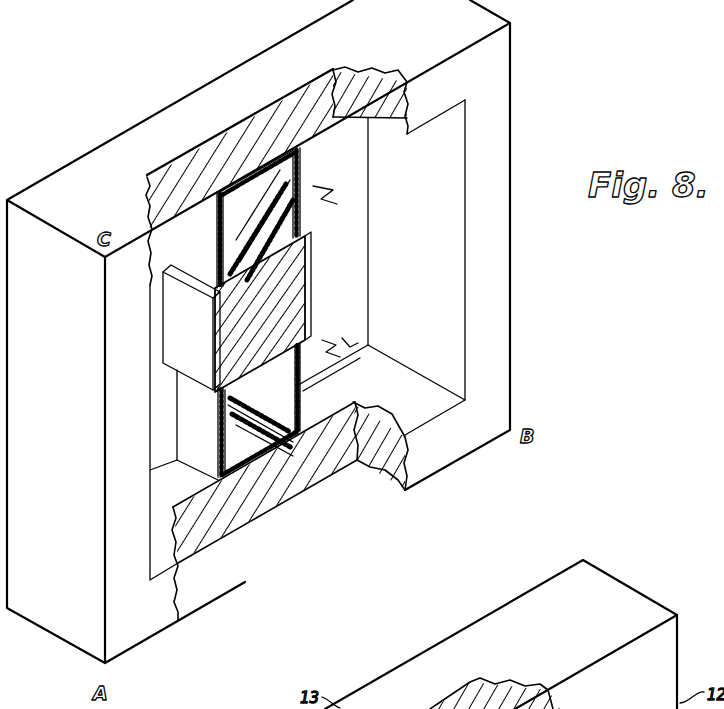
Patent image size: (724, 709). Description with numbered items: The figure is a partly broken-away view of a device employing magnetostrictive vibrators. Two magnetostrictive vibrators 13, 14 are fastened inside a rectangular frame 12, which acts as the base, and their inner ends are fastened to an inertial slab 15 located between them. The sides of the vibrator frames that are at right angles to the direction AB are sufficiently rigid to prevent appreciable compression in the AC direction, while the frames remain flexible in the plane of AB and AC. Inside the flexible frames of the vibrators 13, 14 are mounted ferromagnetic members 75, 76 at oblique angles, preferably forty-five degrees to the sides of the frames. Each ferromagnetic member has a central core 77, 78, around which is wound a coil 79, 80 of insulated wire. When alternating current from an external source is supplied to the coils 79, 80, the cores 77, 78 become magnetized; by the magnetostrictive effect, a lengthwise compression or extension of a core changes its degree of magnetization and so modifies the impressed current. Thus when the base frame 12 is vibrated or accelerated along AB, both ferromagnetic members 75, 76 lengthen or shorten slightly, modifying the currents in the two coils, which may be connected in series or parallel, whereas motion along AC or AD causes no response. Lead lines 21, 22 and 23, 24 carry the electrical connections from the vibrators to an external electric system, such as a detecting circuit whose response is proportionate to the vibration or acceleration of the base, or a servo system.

The rectangular frame 12 is at (500, 103).
The magnetostrictive vibrator 13 is at (150, 242).
The magnetostrictive vibrator 14 is at (185, 442).
The inertial slab 15 is at (303, 283).
The lead line 21 is at (350, 182).
The lead line 22 is at (318, 185).
The lead line 23 is at (323, 342).
The lead line 24 is at (350, 347).
The ferromagnetic member 75 is at (218, 263).
The ferromagnetic member 76 is at (218, 390).
The central core 77 is at (255, 220).
The central core 78 is at (262, 425).
The coil 79 is at (247, 208).
The coil 80 is at (275, 410).